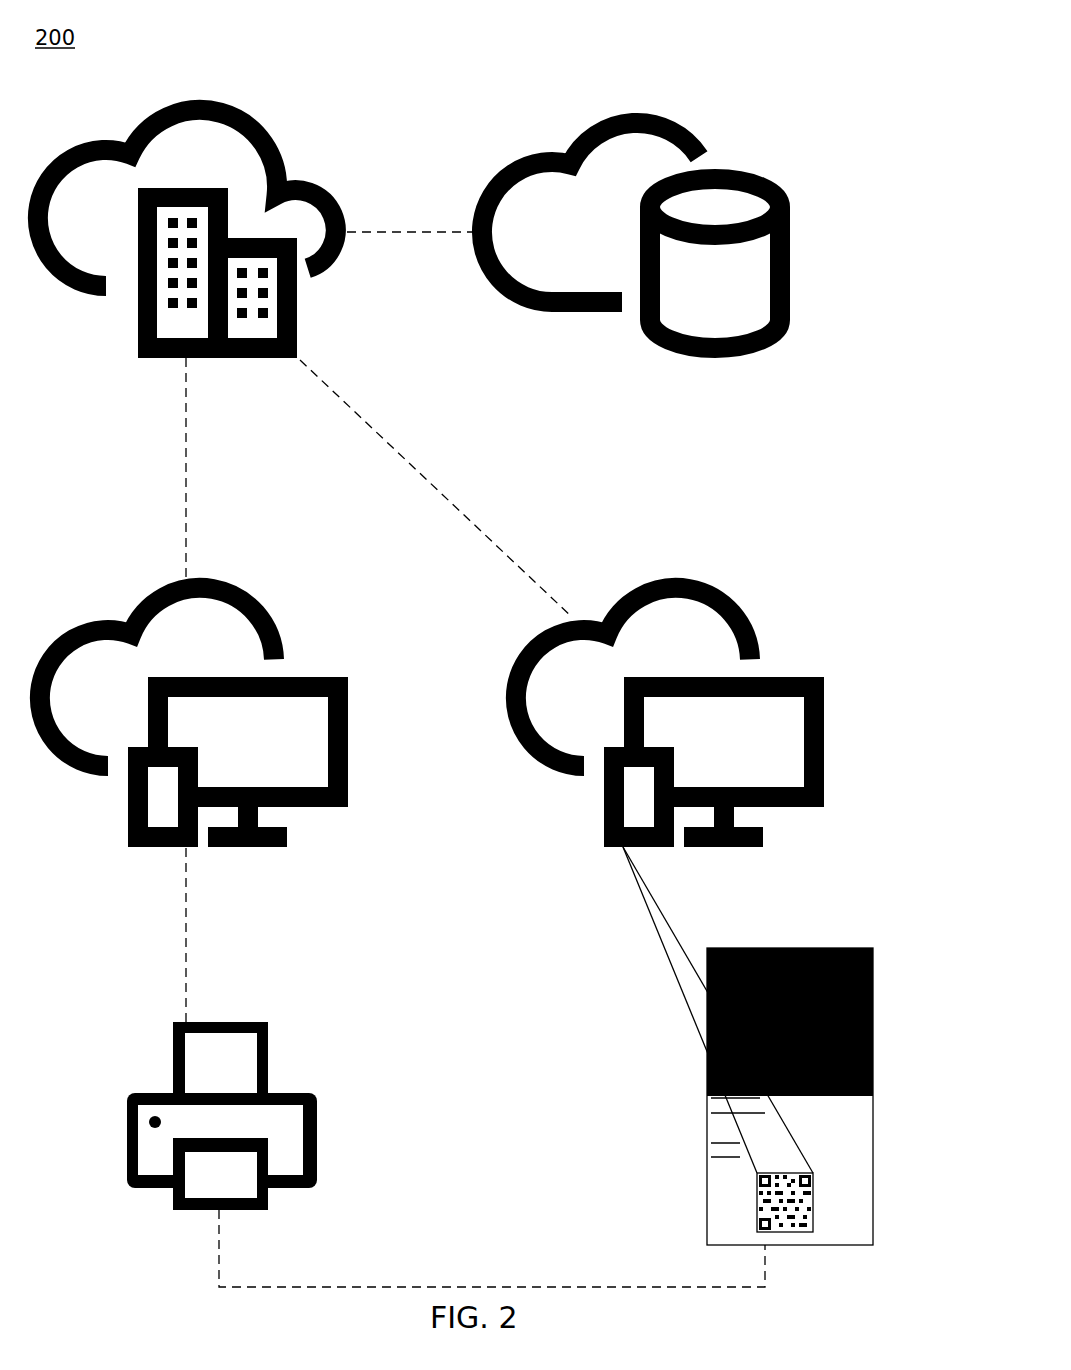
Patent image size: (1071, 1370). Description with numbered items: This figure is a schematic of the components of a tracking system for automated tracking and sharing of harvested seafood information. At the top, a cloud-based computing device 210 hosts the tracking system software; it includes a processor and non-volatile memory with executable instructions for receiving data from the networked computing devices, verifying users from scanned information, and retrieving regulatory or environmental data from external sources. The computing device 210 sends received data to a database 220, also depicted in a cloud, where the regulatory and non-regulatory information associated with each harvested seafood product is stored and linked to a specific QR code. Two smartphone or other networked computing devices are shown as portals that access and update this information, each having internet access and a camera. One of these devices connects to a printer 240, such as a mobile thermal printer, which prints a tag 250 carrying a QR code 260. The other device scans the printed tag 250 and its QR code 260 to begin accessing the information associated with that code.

The cloud-based computing device 210 is at (180, 100).
The database 220 is at (658, 113).
The printer 240 is at (317, 1143).
The printed tag 250 is at (875, 1072).
The QR code 260 is at (757, 1210).